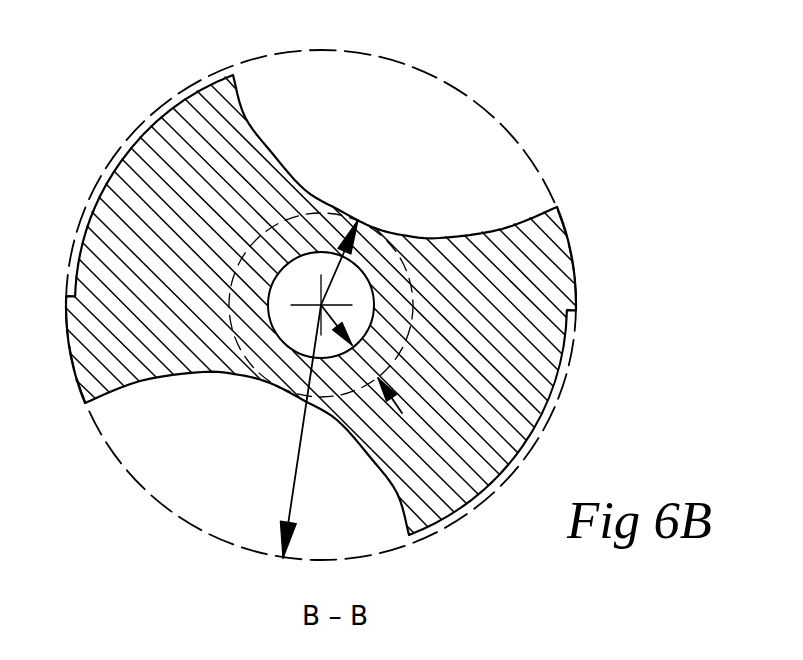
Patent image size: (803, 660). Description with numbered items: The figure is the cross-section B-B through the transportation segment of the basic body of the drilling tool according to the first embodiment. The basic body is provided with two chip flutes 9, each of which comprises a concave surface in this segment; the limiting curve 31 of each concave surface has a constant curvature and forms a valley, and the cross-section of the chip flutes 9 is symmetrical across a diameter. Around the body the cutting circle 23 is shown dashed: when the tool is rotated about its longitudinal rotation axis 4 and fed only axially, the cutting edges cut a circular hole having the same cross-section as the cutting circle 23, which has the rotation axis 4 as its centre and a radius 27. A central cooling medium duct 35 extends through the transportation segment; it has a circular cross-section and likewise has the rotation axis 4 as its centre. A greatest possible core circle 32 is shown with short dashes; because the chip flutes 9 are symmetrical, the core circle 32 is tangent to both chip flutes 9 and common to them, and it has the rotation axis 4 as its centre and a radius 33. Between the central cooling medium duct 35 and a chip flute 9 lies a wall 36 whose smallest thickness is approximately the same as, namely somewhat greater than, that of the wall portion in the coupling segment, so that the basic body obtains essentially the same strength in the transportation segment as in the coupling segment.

The cutting circle 23 is at (309, 50).
The limiting curve 31 is at (477, 232).
The core circle 32 is at (237, 352).
The rotation axis 4 is at (321, 305).
The central cooling medium duct 35 is at (297, 316).
The radius of the core circle 33 is at (355, 282).
The radius of the cutting circle 27 is at (302, 467).
The wall 36 is at (362, 363).
The chip flute 9 is at (178, 445).